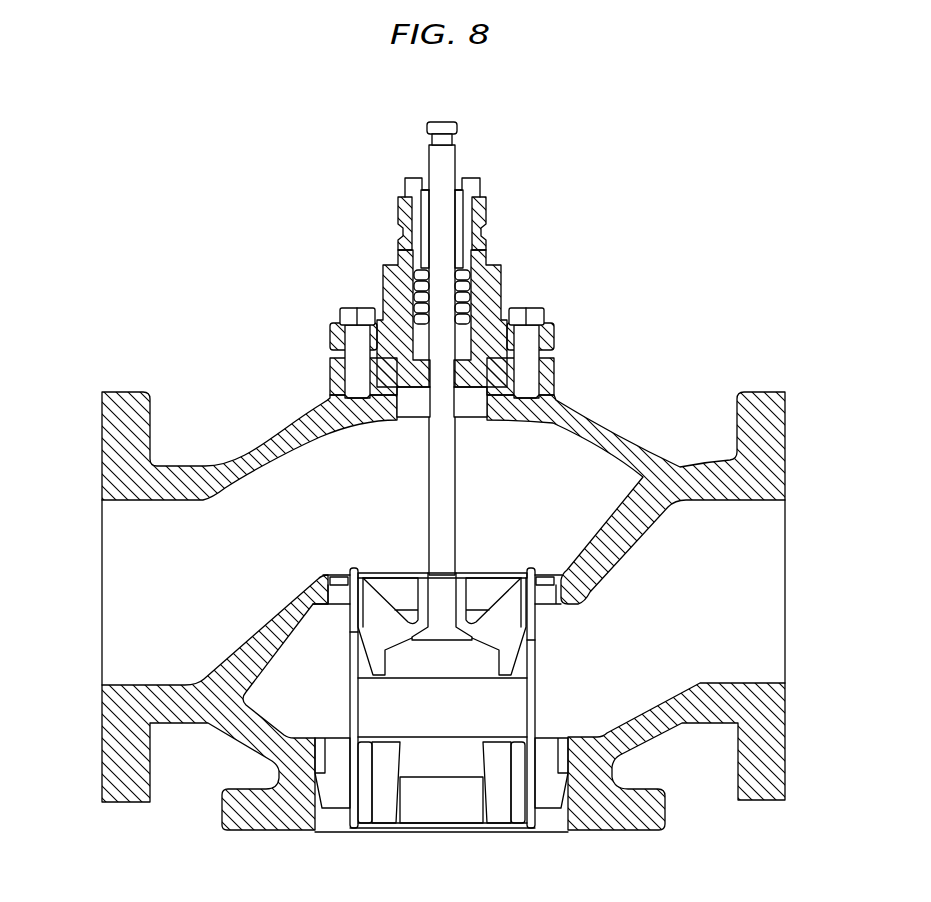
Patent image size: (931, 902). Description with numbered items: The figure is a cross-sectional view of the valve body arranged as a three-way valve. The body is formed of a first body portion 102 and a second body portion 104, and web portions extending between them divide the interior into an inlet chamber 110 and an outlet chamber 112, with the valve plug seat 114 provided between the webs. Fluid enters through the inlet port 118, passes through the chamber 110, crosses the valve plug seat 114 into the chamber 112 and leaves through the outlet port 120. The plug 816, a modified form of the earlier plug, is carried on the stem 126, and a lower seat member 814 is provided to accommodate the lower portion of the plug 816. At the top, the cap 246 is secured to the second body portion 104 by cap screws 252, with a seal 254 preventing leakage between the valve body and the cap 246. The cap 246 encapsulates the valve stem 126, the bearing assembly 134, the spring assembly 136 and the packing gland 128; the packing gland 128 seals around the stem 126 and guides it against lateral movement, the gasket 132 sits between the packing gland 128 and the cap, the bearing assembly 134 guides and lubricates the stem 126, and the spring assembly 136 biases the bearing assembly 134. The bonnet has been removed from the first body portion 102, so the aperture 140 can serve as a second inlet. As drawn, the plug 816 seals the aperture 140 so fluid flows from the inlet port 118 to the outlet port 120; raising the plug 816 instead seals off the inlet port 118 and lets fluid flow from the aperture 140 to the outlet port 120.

The first body portion 102 is at (786, 745).
The second body portion 104 is at (786, 446).
The chamber 110 is at (288, 545).
The chamber 112 is at (661, 673).
The valve plug seat 114 is at (556, 608).
The inlet port 118 is at (100, 590).
The outlet port 120 is at (786, 592).
The stem 126 is at (440, 120).
The packing gland 128 is at (481, 178).
The gasket 132 is at (490, 205).
The bearing assembly 134 is at (500, 302).
The spring assembly 136 is at (502, 270).
The aperture 140 is at (423, 852).
The cap 246 is at (556, 336).
The cap screws 252 is at (545, 312).
The seal 254 is at (556, 370).
The lower seat member 814 is at (551, 737).
The plug 816 is at (538, 700).